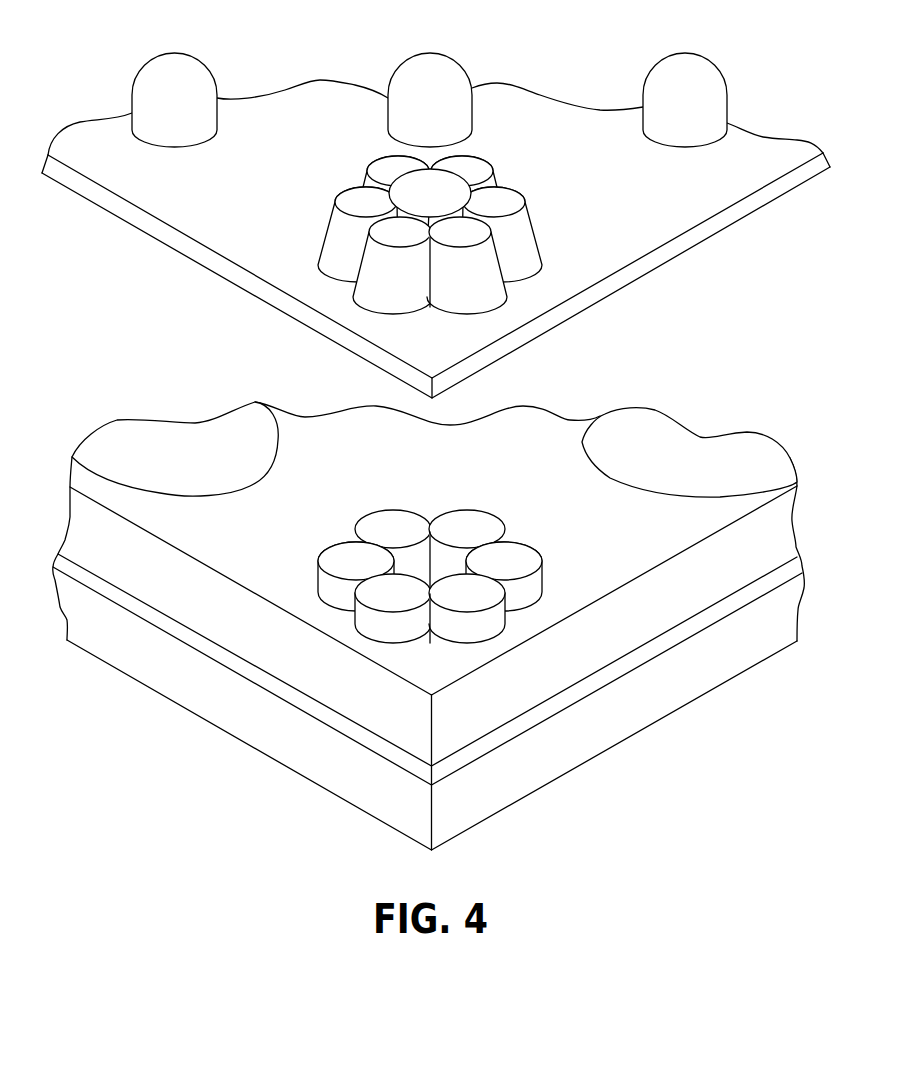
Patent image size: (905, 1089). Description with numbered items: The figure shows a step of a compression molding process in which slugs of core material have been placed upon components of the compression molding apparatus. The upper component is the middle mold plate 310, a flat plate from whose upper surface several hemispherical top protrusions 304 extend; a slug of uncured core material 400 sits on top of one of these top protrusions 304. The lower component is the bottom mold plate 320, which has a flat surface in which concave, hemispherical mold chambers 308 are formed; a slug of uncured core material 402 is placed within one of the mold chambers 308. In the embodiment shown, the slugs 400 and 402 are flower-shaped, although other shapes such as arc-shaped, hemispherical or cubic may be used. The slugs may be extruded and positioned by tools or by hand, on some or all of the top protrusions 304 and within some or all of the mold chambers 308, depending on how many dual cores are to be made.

The top protrusions 304 is at (702, 70).
The middle mold plate 310 is at (733, 212).
The slugs of uncured core material 400 is at (522, 237).
The mold chambers 308 is at (696, 455).
The slugs of uncured core material 402 is at (519, 558).
The bottom mold plate 320 is at (664, 597).